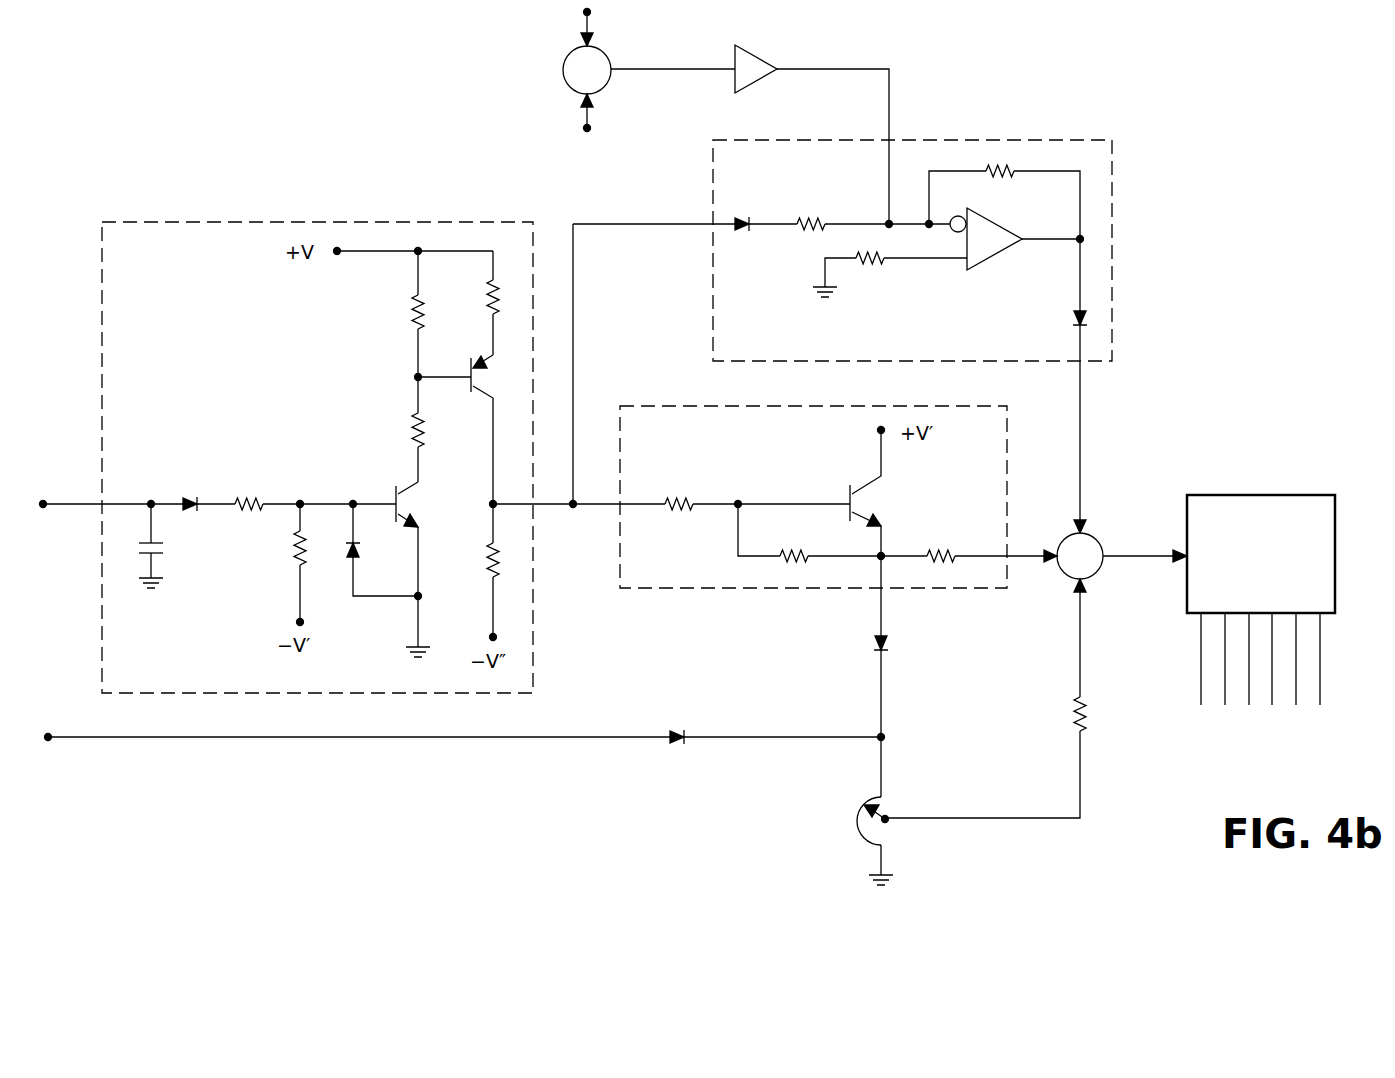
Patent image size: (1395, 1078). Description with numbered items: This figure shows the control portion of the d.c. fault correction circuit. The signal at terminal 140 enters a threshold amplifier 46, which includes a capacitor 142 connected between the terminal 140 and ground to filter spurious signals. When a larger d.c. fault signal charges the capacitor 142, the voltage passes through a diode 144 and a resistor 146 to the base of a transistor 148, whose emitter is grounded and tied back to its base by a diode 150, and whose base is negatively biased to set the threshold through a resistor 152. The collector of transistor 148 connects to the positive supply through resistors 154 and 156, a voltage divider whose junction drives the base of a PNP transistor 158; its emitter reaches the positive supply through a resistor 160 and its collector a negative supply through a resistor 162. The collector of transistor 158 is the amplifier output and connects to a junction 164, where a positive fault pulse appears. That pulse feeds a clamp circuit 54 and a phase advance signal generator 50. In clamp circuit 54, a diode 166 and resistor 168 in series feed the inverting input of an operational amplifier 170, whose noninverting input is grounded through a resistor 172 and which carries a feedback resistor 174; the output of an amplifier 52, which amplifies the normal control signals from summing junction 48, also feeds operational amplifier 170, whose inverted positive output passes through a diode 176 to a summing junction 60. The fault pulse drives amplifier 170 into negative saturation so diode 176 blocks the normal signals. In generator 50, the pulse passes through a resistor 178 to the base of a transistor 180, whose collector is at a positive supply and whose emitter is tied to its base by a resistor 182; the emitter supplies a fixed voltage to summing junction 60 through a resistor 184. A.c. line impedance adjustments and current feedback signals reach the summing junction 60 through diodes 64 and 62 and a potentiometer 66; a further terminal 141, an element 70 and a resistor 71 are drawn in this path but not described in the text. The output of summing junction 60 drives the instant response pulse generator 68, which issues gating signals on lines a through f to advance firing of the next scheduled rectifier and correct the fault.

The amplifier 46 is at (283, 222).
The summing junction 48 is at (563, 72).
The phase advance signal generator 50 is at (690, 406).
The amplifier 52 is at (770, 58).
The clamp circuit 54 is at (1100, 140).
The summing junction 60 is at (1064, 576).
The diode 62 is at (678, 728).
The diode 64 is at (872, 642).
The potentiometer 66 is at (858, 822).
The instant response pulse generator 68 is at (1270, 495).
The emitter of transistor 66 70 is at (886, 808).
The resistor 71 is at (1068, 714).
The terminal 140 is at (50, 498).
The input terminal 141 is at (52, 745).
The capacitor 142 is at (168, 548).
The diode 144 is at (191, 490).
The resistor 146 is at (246, 488).
The transistor 148 is at (416, 498).
The diode 150 is at (387, 552).
The resistor 152 is at (288, 558).
The resistor 154 is at (403, 324).
The resistor 156 is at (403, 434).
The transistor 158 is at (474, 392).
The resistor 160 is at (483, 288).
The resistor 162 is at (482, 568).
The junction 164 is at (575, 512).
The diode 166 is at (740, 236).
The resistor 168 is at (812, 212).
The operational amplifier 170 is at (995, 258).
The resistor 172 is at (870, 272).
The resistor 174 is at (1000, 180).
The diode 176 is at (1072, 318).
The resistor 178 is at (676, 490).
The transistor 180 is at (888, 498).
The resistor 182 is at (792, 548).
The resistor 184 is at (941, 546).